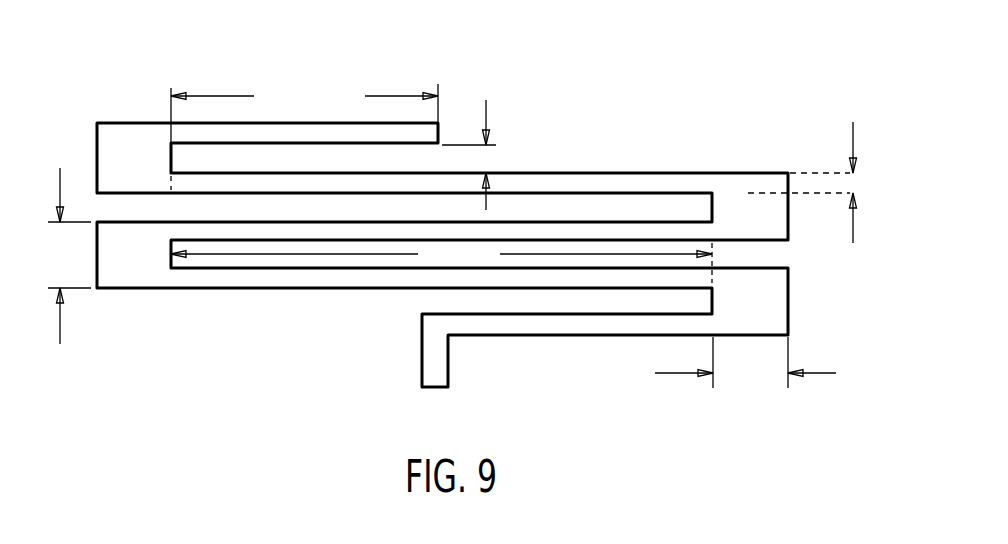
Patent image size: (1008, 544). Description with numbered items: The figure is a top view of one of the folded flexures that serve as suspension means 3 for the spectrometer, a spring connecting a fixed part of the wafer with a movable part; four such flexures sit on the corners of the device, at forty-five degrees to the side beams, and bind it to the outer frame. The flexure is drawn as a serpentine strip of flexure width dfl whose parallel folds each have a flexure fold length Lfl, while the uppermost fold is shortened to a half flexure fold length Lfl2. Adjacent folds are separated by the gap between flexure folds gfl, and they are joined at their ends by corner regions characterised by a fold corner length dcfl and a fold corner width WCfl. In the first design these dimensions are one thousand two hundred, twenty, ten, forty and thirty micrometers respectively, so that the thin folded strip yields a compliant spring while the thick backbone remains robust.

The suspension means 3 is at (308, 289).
The half flexure fold length Lfl2 is at (304, 135).
The gap between flexure folds gfl is at (485, 155).
The flexure width dfl is at (819, 182).
The fold corner length dcfl is at (59, 256).
The flexure fold length Lfl is at (441, 260).
The fold corner width WCfl is at (745, 365).